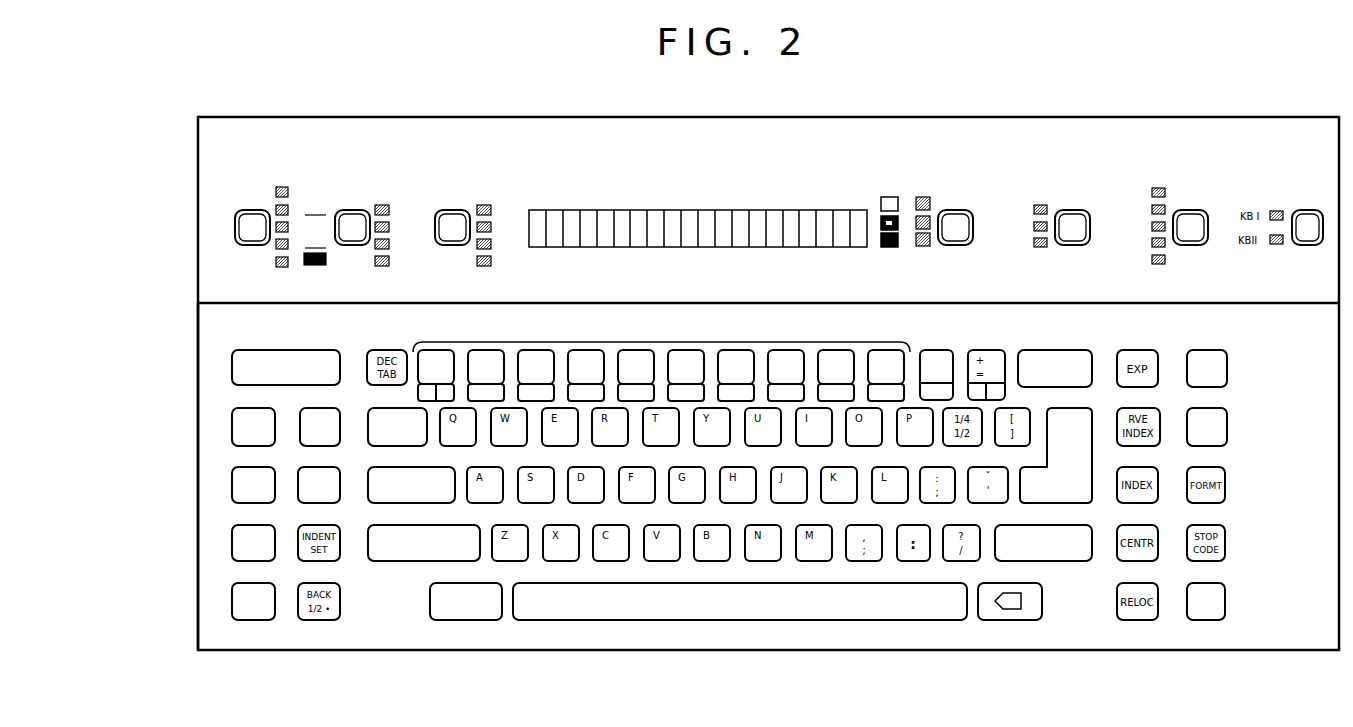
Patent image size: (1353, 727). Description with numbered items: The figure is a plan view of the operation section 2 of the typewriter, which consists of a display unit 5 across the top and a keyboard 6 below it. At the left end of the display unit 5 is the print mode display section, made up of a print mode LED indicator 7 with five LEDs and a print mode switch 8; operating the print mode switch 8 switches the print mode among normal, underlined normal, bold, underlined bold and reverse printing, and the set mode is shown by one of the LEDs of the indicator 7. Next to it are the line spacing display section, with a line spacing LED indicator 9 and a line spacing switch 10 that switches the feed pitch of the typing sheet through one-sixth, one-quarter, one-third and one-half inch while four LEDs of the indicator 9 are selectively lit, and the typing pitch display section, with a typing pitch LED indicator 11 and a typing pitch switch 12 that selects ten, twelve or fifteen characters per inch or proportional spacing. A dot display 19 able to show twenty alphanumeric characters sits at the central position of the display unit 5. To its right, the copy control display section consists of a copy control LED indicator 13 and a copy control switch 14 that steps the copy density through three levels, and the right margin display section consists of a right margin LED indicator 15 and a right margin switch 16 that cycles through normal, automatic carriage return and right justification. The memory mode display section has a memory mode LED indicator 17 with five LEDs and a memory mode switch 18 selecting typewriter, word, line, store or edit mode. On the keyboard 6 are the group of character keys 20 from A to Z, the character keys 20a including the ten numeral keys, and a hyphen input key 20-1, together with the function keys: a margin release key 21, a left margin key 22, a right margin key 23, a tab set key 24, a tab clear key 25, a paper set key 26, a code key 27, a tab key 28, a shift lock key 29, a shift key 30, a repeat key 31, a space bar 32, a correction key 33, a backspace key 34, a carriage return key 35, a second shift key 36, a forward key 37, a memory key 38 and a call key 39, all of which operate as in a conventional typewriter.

The operation section 2 is at (192, 326).
The display unit 5 is at (197, 166).
The keyboard 6 is at (197, 457).
The print mode LED indicator 7 is at (283, 184).
The print mode switch 8 is at (252, 210).
The line spacing LED indicator 9 is at (383, 204).
The line spacing switch 10 is at (353, 210).
The typing pitch LED indicator 11 is at (486, 204).
The typing pitch switch 12 is at (453, 210).
The copy control LED indicator 13 is at (889, 195).
The copy control switch 14 is at (959, 210).
The right margin LED indicator 15 is at (1043, 199).
The right margin switch 16 is at (1077, 210).
The memory mode LED indicator 17 is at (1158, 186).
The memory mode switch 18 is at (1191, 210).
The dot display 19 is at (726, 210).
The character keys 20 is at (661, 357).
The character keys 20a is at (577, 342).
The hyphen input key 20-1 is at (940, 353).
The margin release key 21 is at (234, 353).
The left margin key 22 is at (232, 420).
The right margin key 23 is at (230, 478).
The tab set key 24 is at (230, 535).
The tab clear key 25 is at (230, 595).
The paper set key 26 is at (323, 410).
The code key 27 is at (298, 478).
The tab key 28 is at (375, 410).
The shift lock key 29 is at (366, 478).
The shift key 30 is at (378, 561).
The repeat key 31 is at (430, 612).
The space bar 32 is at (786, 620).
The correction key 33 is at (1042, 612).
The backspace key 34 is at (1064, 350).
The carriage return key 35 is at (1095, 432).
The shift key 36 is at (1050, 561).
The forward key 37 is at (1210, 350).
The memory key 38 is at (1227, 426).
The call key 39 is at (1225, 607).